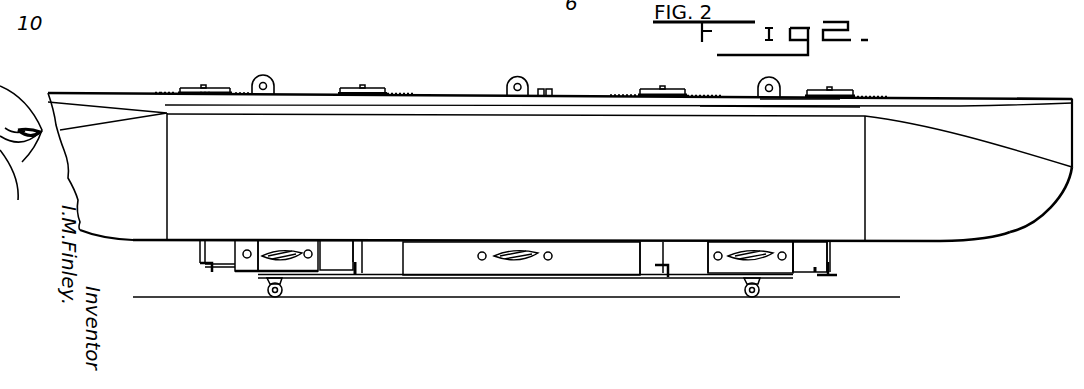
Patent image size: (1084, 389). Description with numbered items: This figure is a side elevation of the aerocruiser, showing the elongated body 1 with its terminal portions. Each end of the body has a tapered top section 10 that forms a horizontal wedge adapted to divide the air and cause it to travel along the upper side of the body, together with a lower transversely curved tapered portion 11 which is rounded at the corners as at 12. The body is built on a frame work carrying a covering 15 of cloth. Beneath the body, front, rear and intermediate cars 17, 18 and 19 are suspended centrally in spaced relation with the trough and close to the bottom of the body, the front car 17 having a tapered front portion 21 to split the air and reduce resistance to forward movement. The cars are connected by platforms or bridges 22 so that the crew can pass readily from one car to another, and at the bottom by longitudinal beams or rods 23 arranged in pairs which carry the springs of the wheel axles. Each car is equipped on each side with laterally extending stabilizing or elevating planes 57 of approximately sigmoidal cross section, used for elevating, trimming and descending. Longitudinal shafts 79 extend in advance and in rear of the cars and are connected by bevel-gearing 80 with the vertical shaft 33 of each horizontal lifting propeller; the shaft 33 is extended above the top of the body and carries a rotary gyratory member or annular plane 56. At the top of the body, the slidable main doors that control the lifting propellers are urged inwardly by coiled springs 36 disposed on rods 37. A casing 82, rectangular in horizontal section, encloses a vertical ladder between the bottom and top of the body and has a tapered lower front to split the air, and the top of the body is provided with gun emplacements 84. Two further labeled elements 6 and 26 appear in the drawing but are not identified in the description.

The body 1 is at (773, 130).
The hull 6 is at (560, 166).
The tapered top section 10 is at (1047, 127).
The lower transversely curved tapered portion 11 is at (945, 221).
The rounded corner 12 is at (1035, 218).
The covering 15 is at (780, 131).
The front car 17 is at (297, 273).
The rear car 18 is at (730, 260).
The intermediate car 19 is at (490, 265).
The tapered front portion 21 is at (242, 263).
The platforms or bridges 22 is at (577, 280).
The longitudinal beams or rods 23 is at (415, 268).
The wheel 26 is at (277, 298).
The vertical shaft 33 is at (200, 248).
The coiled springs 36 is at (233, 90).
The rods 37 is at (157, 90).
The rotary gyratory member or plane 56 is at (383, 90).
The stabilizing or elevating planes 57 is at (290, 249).
The longitudinal shafts 79 is at (337, 268).
The bevel-gearing 80 is at (200, 263).
The casing 82 is at (555, 93).
The gun emplacements 84 is at (276, 83).